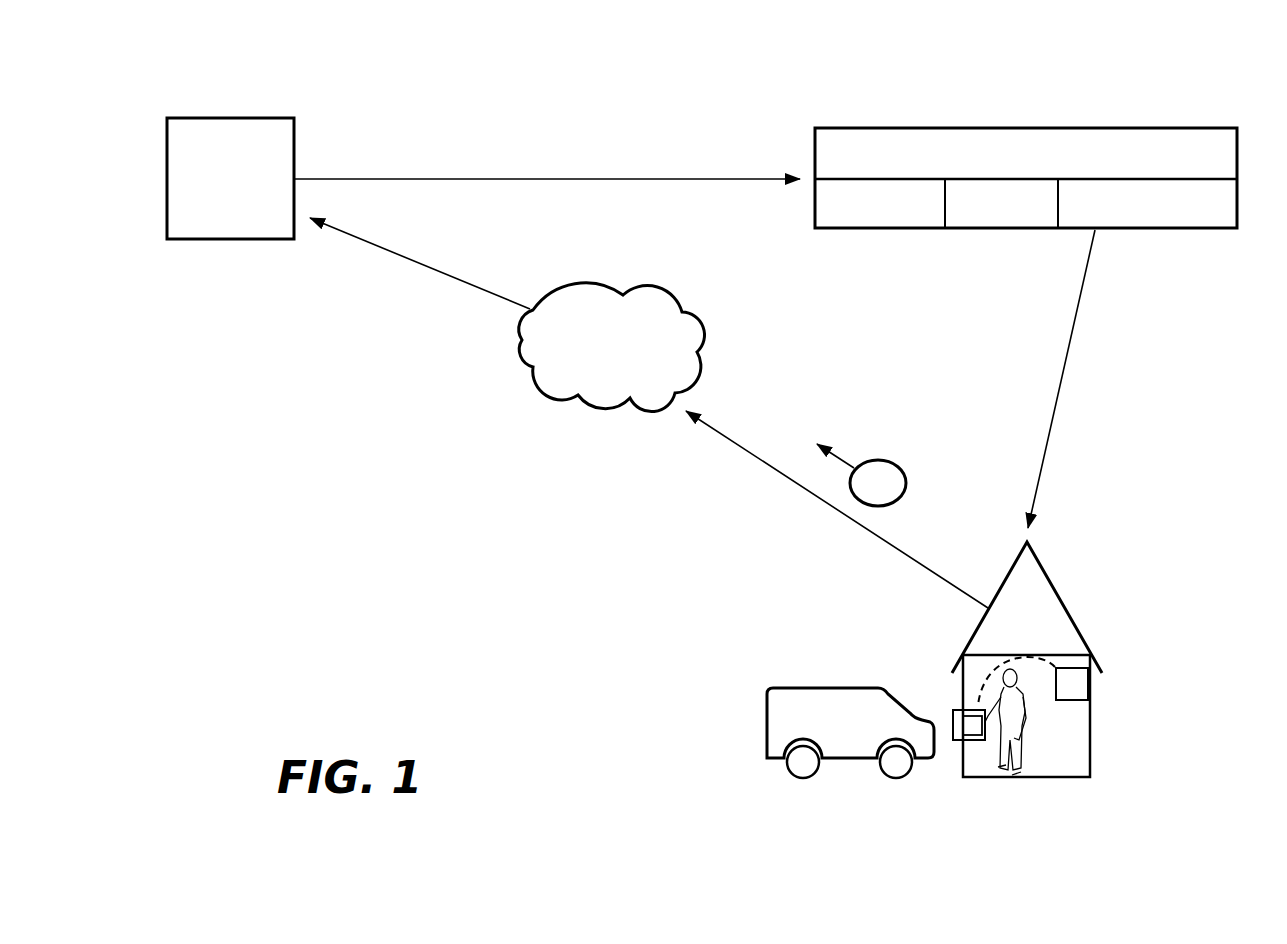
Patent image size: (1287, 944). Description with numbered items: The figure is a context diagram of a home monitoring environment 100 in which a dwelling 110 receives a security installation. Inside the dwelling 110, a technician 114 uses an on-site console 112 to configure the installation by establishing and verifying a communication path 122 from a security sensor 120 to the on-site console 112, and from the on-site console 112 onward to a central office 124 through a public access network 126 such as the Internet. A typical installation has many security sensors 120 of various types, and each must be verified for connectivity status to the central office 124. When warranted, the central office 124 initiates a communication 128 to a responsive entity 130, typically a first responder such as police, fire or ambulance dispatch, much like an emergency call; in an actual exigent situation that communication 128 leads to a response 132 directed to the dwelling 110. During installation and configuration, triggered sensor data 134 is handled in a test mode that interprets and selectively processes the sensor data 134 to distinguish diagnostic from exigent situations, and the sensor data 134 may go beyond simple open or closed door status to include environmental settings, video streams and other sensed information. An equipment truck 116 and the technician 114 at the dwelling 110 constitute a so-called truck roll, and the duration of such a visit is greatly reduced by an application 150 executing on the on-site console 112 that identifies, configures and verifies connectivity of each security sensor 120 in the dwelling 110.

The home monitoring environment 100 is at (334, 556).
The dwelling 110 is at (1075, 778).
The on-site console 112 is at (958, 742).
The technician 114 is at (1025, 712).
The equipment truck 116 is at (780, 722).
The security sensor 120 is at (1090, 680).
The communication path 122 is at (1027, 655).
The central office 124 is at (233, 117).
The public access network 126 is at (608, 412).
The communication 128 is at (509, 178).
The responsive entity 130 is at (843, 230).
The response 132 is at (1070, 353).
The sensor data 134 is at (887, 460).
The application 150 is at (950, 718).